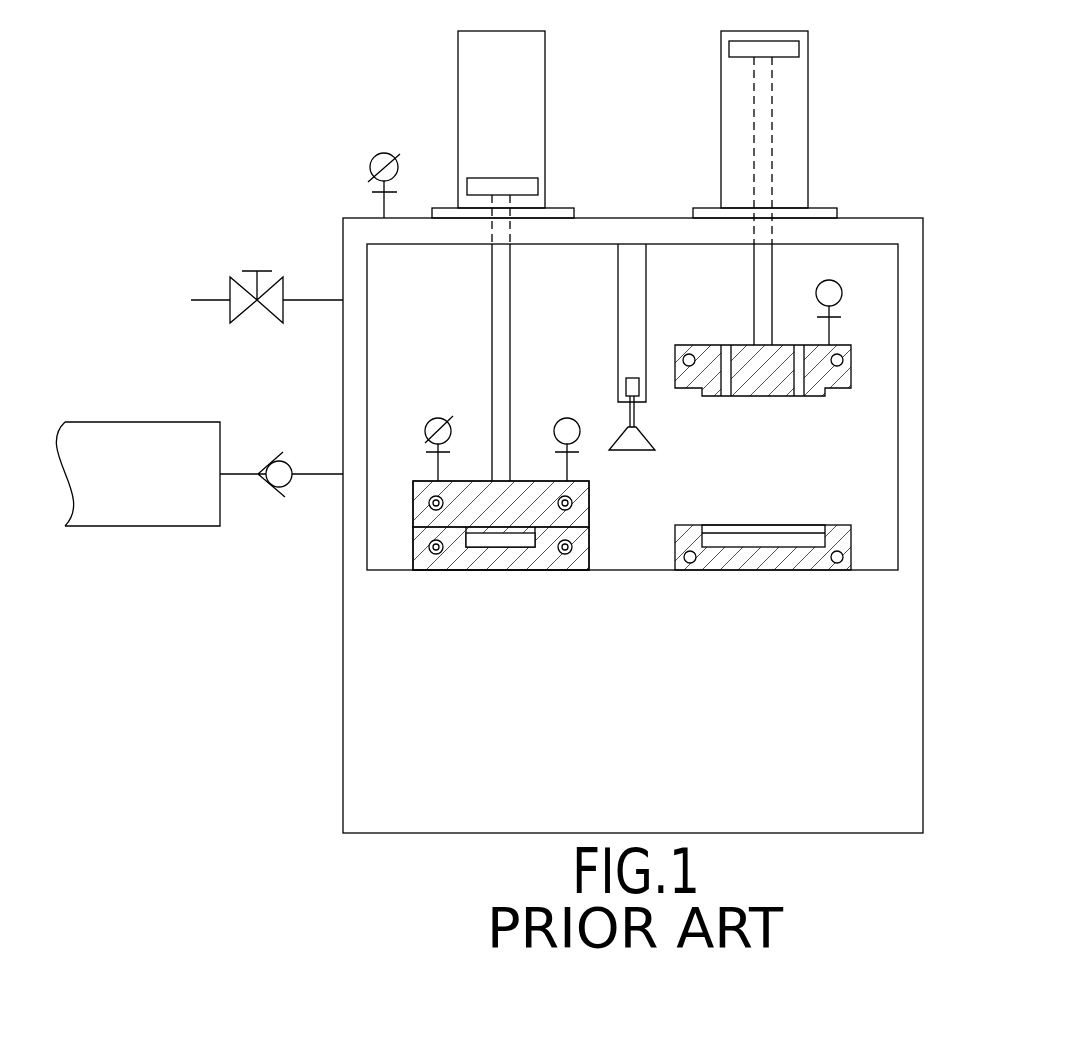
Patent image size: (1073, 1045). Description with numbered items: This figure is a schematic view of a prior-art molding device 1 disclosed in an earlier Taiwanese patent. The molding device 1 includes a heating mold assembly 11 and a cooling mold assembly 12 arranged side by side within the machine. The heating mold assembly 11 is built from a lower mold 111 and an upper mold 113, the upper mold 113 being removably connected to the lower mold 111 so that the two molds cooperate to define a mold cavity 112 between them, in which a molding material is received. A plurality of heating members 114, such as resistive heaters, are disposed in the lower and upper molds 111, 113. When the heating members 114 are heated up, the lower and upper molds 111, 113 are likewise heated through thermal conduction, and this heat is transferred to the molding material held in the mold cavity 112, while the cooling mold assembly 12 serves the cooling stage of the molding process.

The molding device 1 is at (930, 213).
The heating mold assembly 11 is at (413, 541).
The lower mold 111 is at (457, 563).
The mold cavity 112 is at (507, 542).
The upper mold 113 is at (422, 480).
The heating members 114 is at (562, 555).
The cooling mold assembly 12 is at (851, 546).